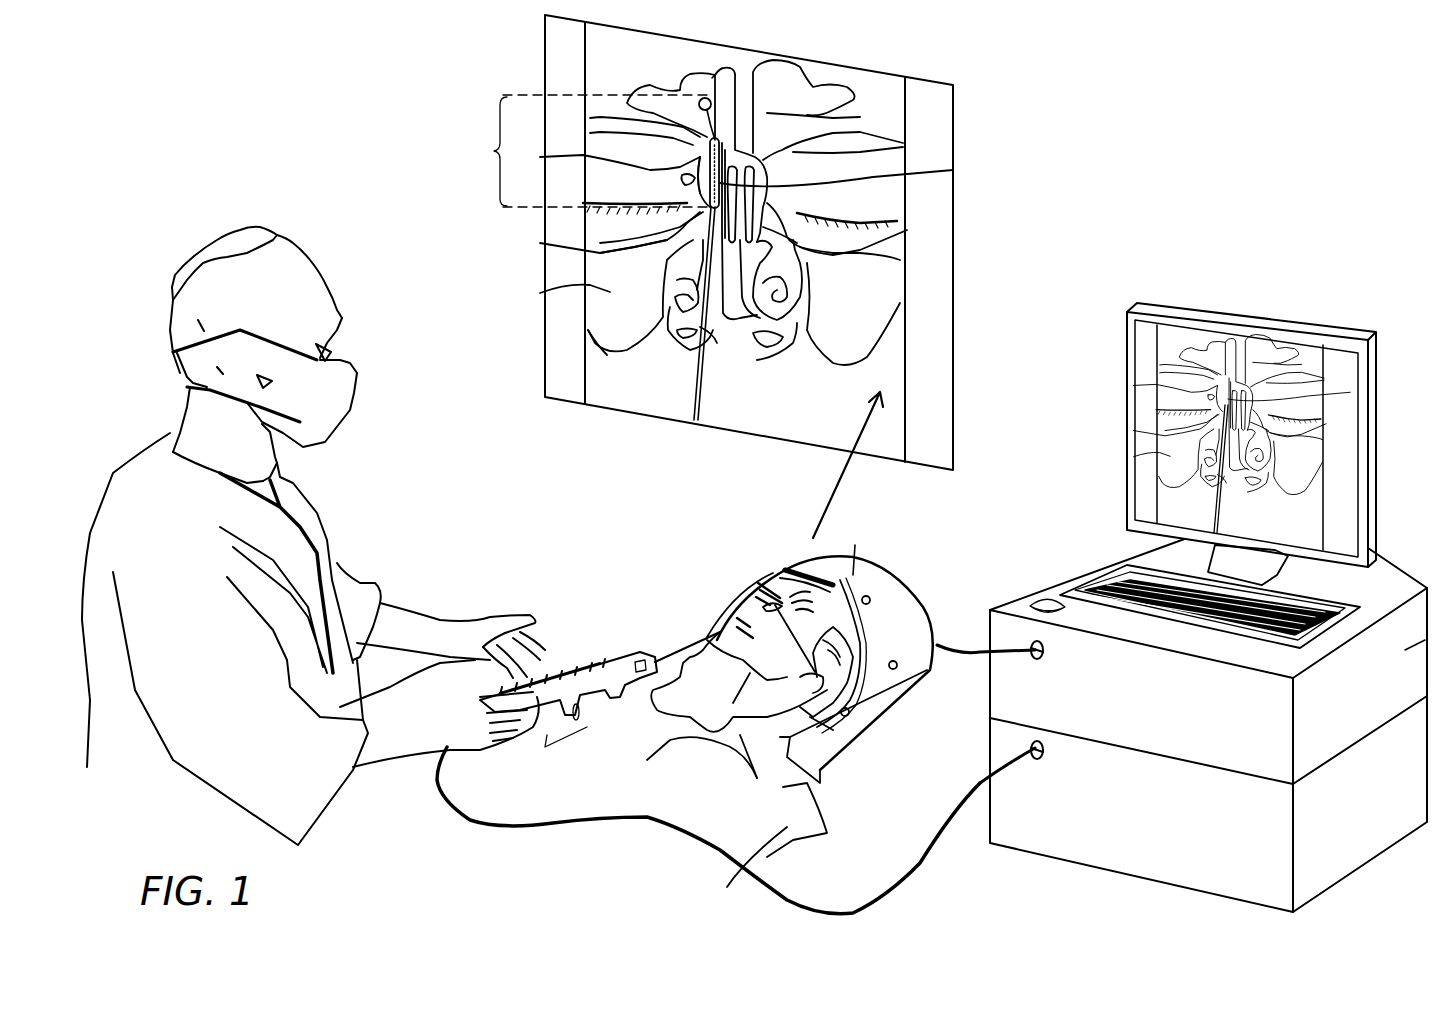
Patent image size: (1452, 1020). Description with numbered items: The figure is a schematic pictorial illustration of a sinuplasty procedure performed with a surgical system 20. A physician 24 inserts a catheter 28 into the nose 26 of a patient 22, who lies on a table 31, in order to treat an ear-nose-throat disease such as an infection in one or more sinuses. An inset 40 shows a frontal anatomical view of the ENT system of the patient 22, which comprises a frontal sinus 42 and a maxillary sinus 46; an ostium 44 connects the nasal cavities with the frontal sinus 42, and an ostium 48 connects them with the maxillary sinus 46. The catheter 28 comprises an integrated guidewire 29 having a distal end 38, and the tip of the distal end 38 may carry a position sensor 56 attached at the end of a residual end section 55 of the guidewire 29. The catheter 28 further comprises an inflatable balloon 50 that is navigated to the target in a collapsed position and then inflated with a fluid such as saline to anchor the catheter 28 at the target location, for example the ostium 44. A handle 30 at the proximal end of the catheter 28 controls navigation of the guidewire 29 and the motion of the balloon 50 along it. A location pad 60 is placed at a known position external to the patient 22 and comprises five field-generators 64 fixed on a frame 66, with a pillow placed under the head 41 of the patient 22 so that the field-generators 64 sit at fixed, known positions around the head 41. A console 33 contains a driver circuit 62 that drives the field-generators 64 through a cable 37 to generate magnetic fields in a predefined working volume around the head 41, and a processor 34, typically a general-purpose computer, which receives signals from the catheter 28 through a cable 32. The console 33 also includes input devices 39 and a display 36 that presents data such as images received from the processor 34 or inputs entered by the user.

The surgical system 20 is at (1194, 220).
The patient 22 is at (635, 572).
The physician 24 is at (128, 470).
The nose 26 is at (815, 665).
The catheter 28 is at (673, 642).
The integrated guidewire 29 is at (694, 410).
The handle 30 is at (565, 655).
The table 31 is at (918, 703).
The cable 32 is at (637, 822).
The console 33 is at (1409, 331).
The processor 34 is at (1015, 838).
The display 36 is at (1310, 333).
The cable 37 is at (975, 665).
The distal end 38 is at (586, 151).
The input devices 39 is at (1092, 426).
The inset 40 is at (954, 226).
The head 41 is at (855, 545).
The frontal sinus 42 is at (720, 88).
The ostium 44 is at (690, 173).
The maxillary sinus 46 is at (612, 291).
The ostium 48 is at (675, 240).
The inflatable balloon 50 is at (752, 179).
The residual end section 55 is at (722, 122).
The position sensor 56 is at (706, 98).
The location pad 60 is at (727, 517).
The driver circuit 62 is at (1413, 647).
The field-generators 64 is at (872, 592).
The frame 66 is at (805, 575).